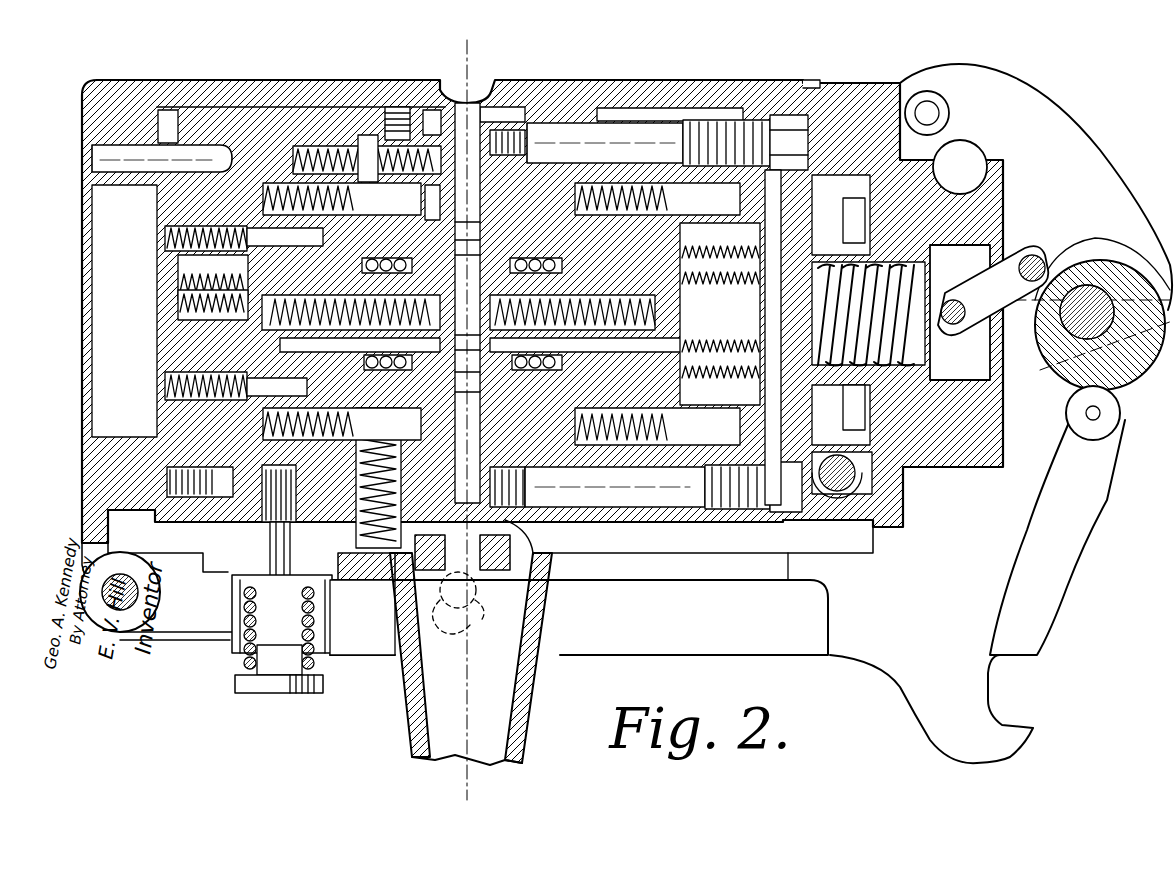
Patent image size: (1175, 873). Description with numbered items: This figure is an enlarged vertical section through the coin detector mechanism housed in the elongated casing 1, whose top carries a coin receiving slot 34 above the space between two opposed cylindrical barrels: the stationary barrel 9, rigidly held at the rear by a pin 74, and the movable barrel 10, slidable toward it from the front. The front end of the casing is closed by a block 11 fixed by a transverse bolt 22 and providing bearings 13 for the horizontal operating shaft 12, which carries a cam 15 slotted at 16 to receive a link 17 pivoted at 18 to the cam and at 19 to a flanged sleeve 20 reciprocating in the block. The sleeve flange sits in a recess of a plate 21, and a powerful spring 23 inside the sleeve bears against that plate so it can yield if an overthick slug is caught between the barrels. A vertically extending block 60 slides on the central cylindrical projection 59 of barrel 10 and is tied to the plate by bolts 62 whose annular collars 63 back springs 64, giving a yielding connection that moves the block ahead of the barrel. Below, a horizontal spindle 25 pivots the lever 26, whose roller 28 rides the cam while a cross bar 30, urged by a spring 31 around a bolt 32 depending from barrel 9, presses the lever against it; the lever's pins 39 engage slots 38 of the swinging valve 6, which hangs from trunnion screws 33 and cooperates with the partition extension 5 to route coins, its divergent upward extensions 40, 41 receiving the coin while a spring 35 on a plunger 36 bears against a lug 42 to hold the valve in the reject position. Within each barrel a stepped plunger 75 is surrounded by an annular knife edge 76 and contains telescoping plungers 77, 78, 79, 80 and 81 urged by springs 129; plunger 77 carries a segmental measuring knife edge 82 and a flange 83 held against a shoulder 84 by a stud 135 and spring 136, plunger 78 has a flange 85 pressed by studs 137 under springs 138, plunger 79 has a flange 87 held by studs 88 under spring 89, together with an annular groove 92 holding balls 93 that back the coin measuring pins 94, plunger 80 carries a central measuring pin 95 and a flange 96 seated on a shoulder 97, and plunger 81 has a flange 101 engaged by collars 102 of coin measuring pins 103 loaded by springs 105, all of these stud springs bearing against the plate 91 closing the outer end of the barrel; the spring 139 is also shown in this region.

The casing 1 is at (558, 92).
The central upwardly projecting extension 5 is at (466, 772).
The swinging valve 6 is at (522, 728).
The stationary barrel 9 is at (228, 108).
The movable barrel 10 is at (530, 105).
The block 11 is at (955, 462).
The operating shaft 12 is at (1105, 328).
The bearings 13 is at (92, 312).
The cam 15 is at (1130, 272).
The slot 16 is at (1068, 242).
The link 17 is at (985, 285).
The pivotal connection 18 is at (1032, 255).
The pivotal connection 19 is at (950, 300).
The flanged sleeve 20 is at (855, 215).
The plate 21 is at (815, 100).
The transverse bolt 22 is at (855, 480).
The spring 23 is at (932, 352).
The horizontal spindle 25 is at (102, 592).
The lever 26 is at (598, 638).
The roller 28 is at (1118, 430).
The cross bar 30 is at (240, 620).
The spring 31 is at (245, 668).
The bolt 32 is at (270, 680).
The trunnion screws 33 is at (470, 607).
The coin receiving slot 34 is at (462, 82).
The spring 35 is at (453, 550).
The plunger 36 is at (340, 558).
The slots 38 is at (405, 650).
The pins 39 is at (455, 641).
The upward extension 40 is at (548, 597).
The upward extension 41 is at (400, 604).
The projecting lug 42 is at (368, 570).
The central cylindrical projection 59 is at (493, 215).
The block 60 is at (500, 107).
The bolts 62 is at (580, 123).
The annular collars 63 is at (712, 120).
The springs 64 is at (778, 115).
The pin 74 is at (96, 152).
The plunger 75 is at (195, 210).
The annular knife edges 76 is at (492, 222).
The plunger 77 is at (492, 240).
The plunger 78 is at (492, 382).
The plunger mechanism 79 is at (492, 362).
The plunger 80 is at (492, 343).
The plunger 81 is at (262, 268).
The measuring knife edge 82 is at (492, 262).
The annular flange 83 is at (590, 170).
The shoulder 84 is at (573, 205).
The annular flange 85 is at (600, 183).
The annular flange 87 is at (625, 183).
The studs 88 is at (720, 315).
The spring 89 is at (748, 337).
The plate 91 is at (170, 265).
The annular groove 92 is at (548, 445).
The balls 93 is at (492, 402).
The coin measuring pins 94 is at (492, 280).
The central measuring pin 95 is at (492, 322).
The annular flange 96 is at (672, 185).
The shoulder 97 is at (650, 183).
The flange 101 is at (720, 314).
The collars 102 is at (252, 322).
The coin measuring pins 103 is at (468, 297).
The springs 105 is at (720, 333).
The springs 129 is at (285, 183).
The stud 135 is at (250, 236).
The spring 136 is at (170, 240).
The studs 137 is at (255, 385).
The springs 138 is at (170, 390).
The spring 139 is at (265, 425).